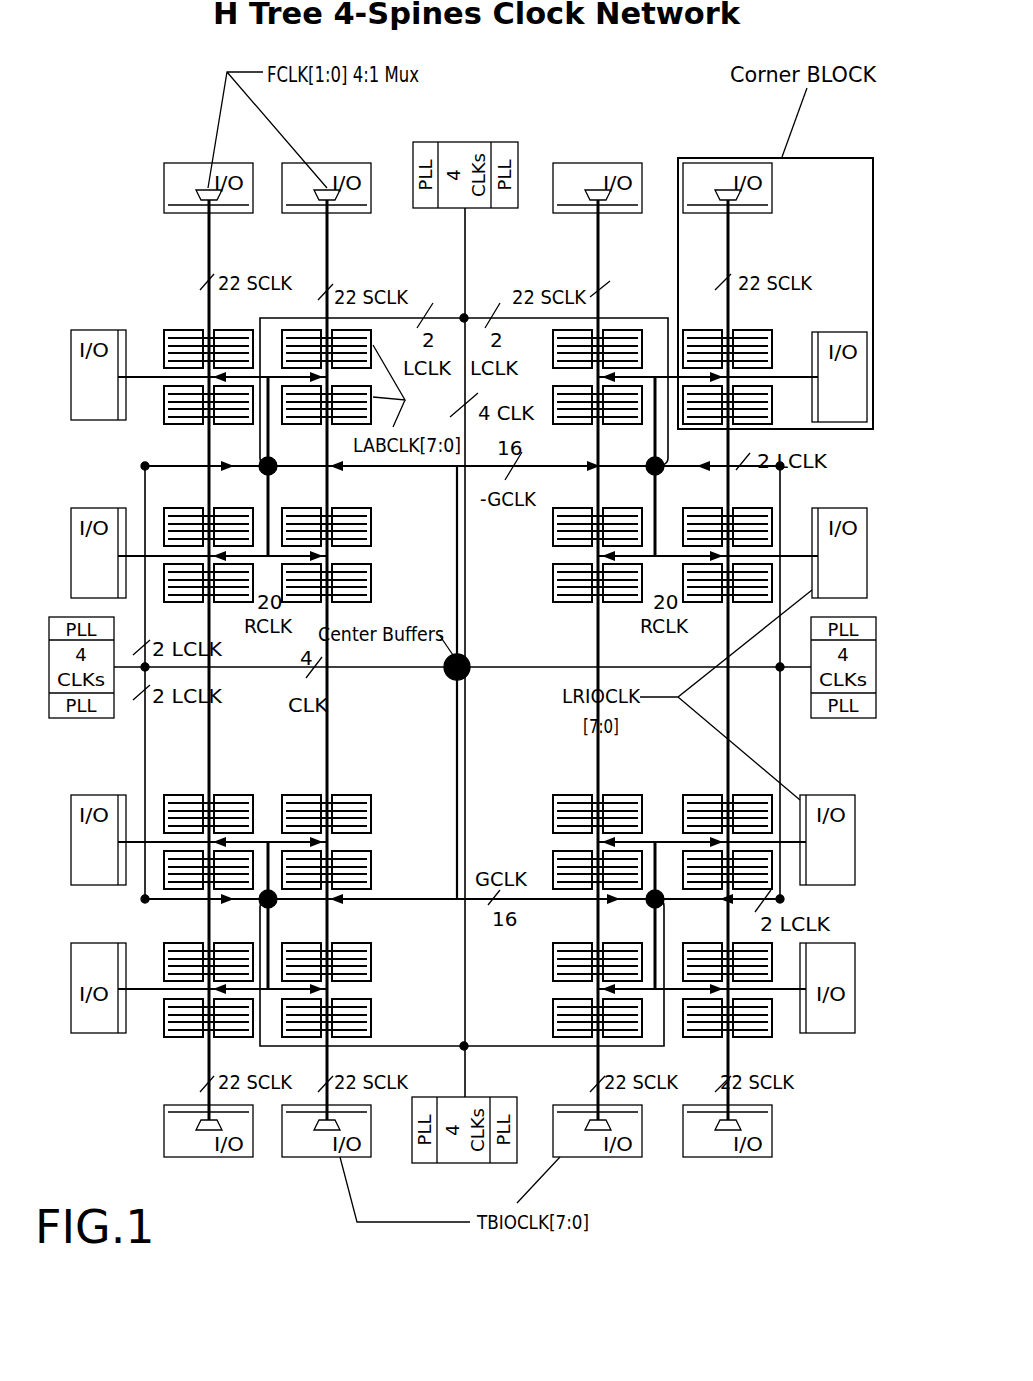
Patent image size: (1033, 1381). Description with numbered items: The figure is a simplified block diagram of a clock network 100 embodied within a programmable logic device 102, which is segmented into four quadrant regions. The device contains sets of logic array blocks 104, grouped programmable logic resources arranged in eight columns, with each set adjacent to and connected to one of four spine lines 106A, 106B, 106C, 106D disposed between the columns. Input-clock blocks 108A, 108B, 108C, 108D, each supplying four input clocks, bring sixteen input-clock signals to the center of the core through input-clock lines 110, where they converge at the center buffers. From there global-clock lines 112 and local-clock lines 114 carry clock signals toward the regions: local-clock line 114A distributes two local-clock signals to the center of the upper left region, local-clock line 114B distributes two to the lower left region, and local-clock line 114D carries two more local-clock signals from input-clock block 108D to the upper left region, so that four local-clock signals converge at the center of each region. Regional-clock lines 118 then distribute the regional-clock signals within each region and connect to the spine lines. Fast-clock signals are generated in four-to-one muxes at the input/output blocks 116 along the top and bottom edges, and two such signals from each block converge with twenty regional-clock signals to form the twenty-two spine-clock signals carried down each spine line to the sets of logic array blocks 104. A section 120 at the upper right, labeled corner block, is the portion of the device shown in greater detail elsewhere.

The clock network 100 is at (470, 652).
The programmable logic device 102 is at (607, 82).
The sets of logic array blocks 104 is at (178, 328).
The spine line 106A is at (212, 243).
The spine line 106B is at (330, 243).
The spine line 106C is at (593, 243).
The spine line 106D is at (731, 243).
The input-clock block 108A is at (122, 738).
The input-clock block 108B is at (462, 1172).
The input-clock block 108C is at (804, 738).
The input-clock block 108D is at (457, 128).
The input-clock lines 110 is at (468, 541).
The global-clock lines 112 is at (454, 555).
The local-clock lines 114 is at (478, 314).
The local-clock line 114A is at (144, 483).
The local-clock line 114B is at (146, 771).
The local-clock line 114D is at (447, 314).
The input/output blocks 116 is at (183, 148).
The regional-clock lines 118 is at (272, 453).
The section 120 is at (816, 148).